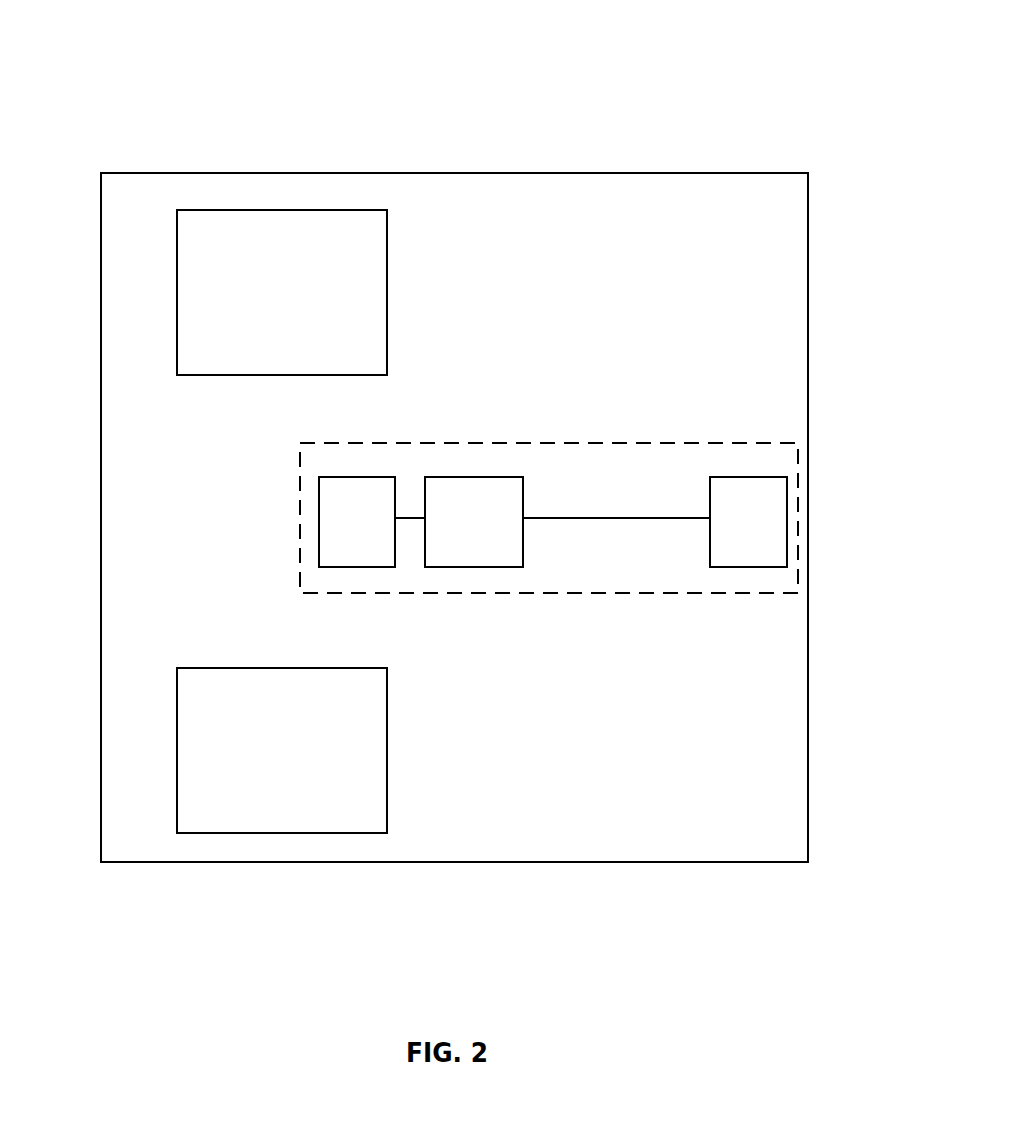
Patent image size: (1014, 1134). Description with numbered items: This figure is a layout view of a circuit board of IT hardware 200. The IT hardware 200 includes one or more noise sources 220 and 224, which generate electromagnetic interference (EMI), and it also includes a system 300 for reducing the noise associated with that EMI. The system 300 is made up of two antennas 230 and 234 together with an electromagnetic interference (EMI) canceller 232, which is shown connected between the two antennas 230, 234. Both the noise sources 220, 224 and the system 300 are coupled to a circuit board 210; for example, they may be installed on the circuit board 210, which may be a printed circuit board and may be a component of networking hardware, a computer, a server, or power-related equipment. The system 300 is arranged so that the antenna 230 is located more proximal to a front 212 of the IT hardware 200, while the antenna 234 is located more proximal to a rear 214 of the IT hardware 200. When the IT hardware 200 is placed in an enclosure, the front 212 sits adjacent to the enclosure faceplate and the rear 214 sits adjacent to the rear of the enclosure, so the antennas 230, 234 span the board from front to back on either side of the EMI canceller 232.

The IT hardware 200 is at (497, 77).
The circuit board 210 is at (537, 804).
The front 212 is at (100, 243).
The rear 214 is at (808, 835).
The noise source 220 is at (265, 302).
The noise source 224 is at (265, 761).
The antenna 230 is at (339, 533).
The electromagnetic interference (EMI) canceller 232 is at (457, 533).
The antenna 234 is at (731, 533).
The system 300 is at (755, 443).